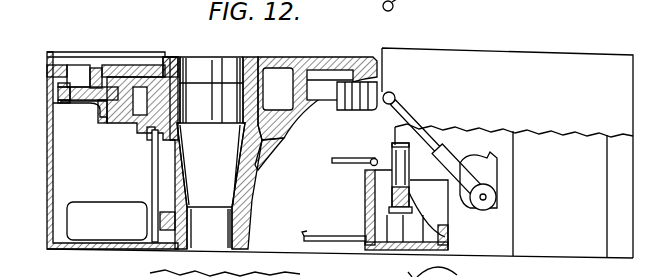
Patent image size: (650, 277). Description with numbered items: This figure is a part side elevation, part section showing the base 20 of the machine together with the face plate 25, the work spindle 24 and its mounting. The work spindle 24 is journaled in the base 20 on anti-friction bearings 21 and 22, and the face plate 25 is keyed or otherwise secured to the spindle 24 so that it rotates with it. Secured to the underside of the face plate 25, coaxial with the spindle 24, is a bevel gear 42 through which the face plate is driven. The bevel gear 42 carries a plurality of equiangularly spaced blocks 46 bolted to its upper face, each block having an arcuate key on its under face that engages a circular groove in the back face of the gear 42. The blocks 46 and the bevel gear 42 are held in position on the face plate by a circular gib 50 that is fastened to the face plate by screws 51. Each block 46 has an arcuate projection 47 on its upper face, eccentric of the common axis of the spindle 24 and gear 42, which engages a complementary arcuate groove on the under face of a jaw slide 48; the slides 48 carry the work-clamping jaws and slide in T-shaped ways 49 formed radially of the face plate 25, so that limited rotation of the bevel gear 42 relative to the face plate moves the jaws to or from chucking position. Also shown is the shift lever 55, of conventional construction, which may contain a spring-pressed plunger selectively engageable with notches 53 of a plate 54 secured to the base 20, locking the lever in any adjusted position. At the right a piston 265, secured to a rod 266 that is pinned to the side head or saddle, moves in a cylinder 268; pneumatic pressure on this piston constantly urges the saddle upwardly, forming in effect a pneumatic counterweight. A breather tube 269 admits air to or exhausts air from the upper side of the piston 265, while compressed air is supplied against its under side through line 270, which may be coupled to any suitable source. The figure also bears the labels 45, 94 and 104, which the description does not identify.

The base 20 is at (284, 243).
The anti-friction bearing 21 is at (150, 118).
The anti-friction bearing 22 is at (173, 214).
The work spindle 24 is at (245, 193).
The face plate 25 is at (273, 70).
The bevel gear 42 is at (100, 112).
The bar underside 45 is at (92, 102).
The block 46 is at (77, 88).
The arcuate projection 47 is at (97, 72).
The jaw slide 48 is at (117, 72).
The T-shaped way 49 is at (165, 58).
The circular gib 50 is at (70, 100).
The screw 51 is at (62, 98).
The notch 53 is at (485, 160).
The plate 54 is at (488, 175).
The shift lever 55 is at (417, 125).
The break line 94 is at (457, 275).
The base plate 104 is at (394, 267).
The piston 265 is at (368, 196).
The rod 266 is at (396, 152).
The cylinder 268 is at (366, 228).
The breather tube 269 is at (366, 160).
The line 270 is at (306, 237).